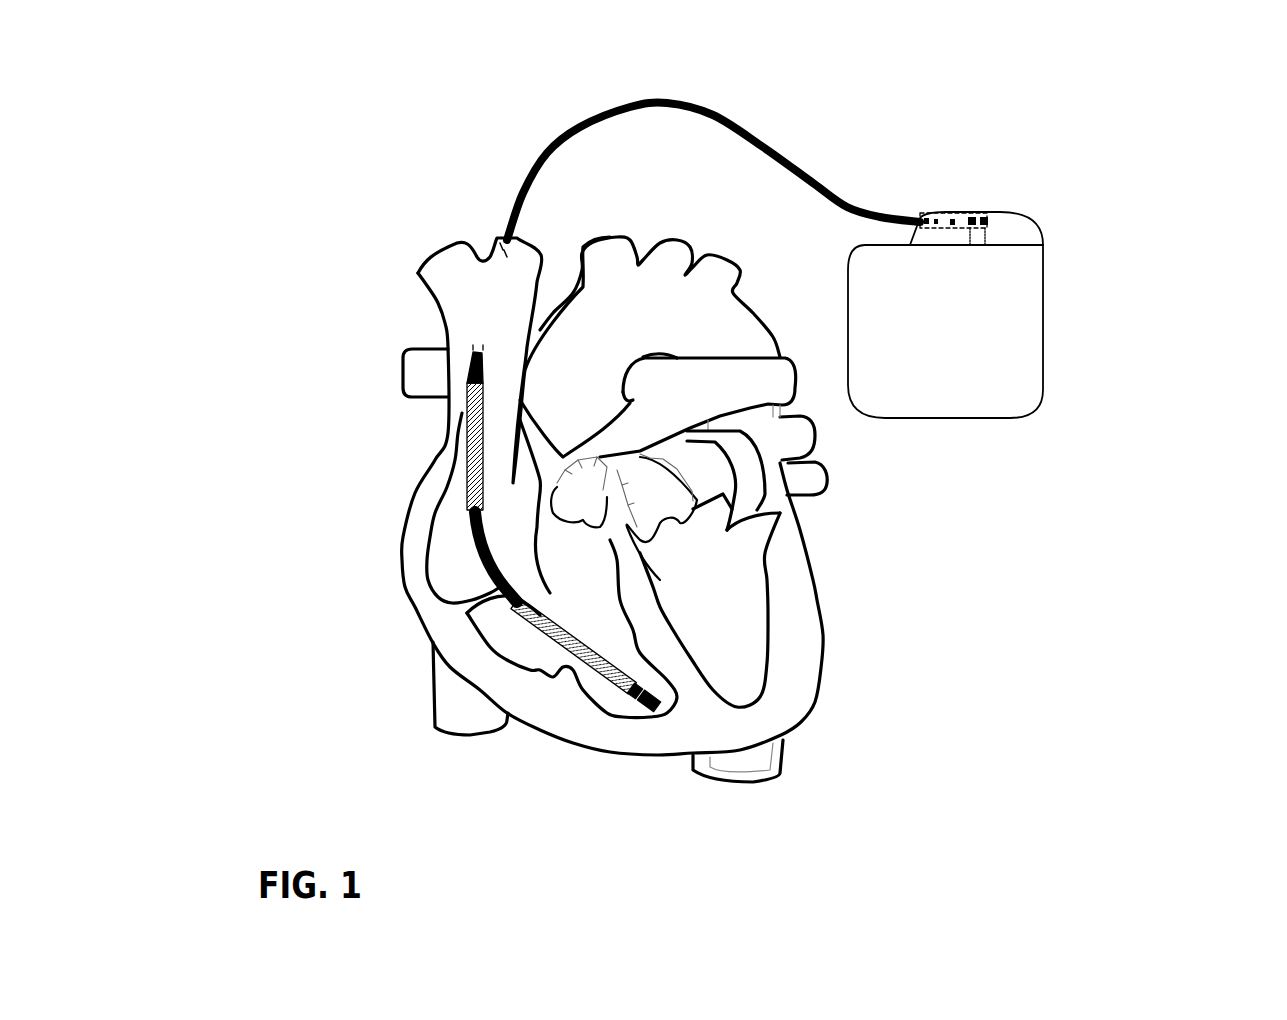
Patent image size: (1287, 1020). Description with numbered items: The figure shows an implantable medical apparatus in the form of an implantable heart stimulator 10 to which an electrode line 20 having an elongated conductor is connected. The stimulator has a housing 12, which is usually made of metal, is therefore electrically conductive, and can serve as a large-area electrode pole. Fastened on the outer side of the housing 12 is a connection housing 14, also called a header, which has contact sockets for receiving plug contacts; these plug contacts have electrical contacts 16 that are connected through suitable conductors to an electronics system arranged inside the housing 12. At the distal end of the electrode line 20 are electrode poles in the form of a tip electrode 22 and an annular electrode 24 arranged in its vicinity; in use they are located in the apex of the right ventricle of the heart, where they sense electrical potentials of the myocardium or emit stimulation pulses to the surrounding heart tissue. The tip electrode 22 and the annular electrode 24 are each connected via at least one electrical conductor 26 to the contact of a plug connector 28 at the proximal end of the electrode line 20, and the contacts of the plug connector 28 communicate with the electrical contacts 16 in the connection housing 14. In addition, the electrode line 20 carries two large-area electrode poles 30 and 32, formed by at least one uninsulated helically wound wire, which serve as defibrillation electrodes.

The implantable heart stimulator 10 is at (1107, 383).
The housing 12 is at (948, 378).
The connection housing 14 is at (1008, 225).
The electrical contacts 16 is at (993, 220).
The electrode line 20 is at (520, 176).
The tip electrode 22 is at (656, 710).
The annular electrode 24 is at (630, 700).
The electrical conductor 26 is at (606, 113).
The plug connector 28 is at (960, 215).
The large-area electrode pole 30 is at (540, 630).
The large-area electrode pole 32 is at (466, 432).